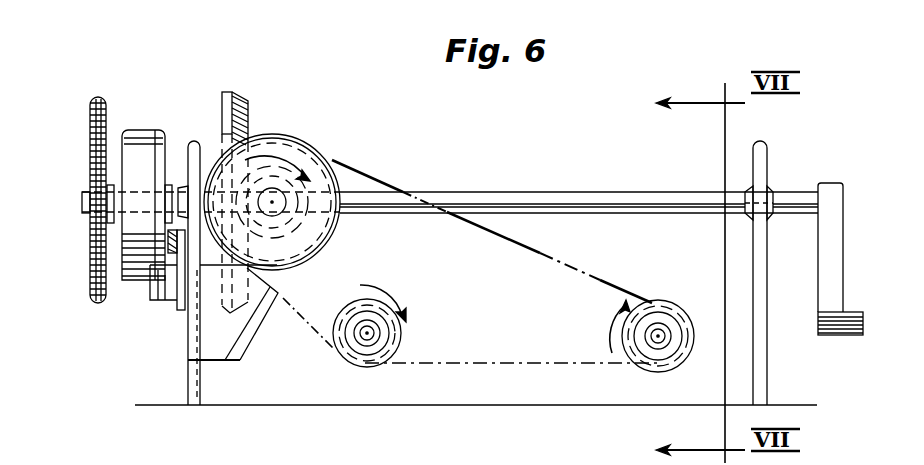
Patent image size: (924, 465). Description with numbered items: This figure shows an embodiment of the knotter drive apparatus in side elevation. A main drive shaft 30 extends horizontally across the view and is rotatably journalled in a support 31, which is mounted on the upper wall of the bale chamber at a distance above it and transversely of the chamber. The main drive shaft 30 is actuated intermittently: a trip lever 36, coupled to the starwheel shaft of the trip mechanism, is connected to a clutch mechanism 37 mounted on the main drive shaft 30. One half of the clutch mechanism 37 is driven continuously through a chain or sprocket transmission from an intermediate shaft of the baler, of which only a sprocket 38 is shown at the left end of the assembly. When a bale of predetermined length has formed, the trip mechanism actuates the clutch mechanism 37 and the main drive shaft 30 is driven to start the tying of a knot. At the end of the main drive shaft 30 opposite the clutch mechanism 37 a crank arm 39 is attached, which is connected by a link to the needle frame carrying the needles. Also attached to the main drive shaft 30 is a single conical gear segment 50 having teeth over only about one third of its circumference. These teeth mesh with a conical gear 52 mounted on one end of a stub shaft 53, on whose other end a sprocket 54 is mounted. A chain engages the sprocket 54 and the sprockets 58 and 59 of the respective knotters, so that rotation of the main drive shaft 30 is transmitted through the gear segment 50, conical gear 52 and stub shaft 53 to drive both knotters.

The main drive shaft 30 is at (590, 192).
The support 31 is at (188, 378).
The trip lever 36 is at (148, 282).
The clutch mechanism 37 is at (178, 148).
The sprocket 38 is at (92, 278).
The crank arm 39 is at (845, 263).
The conical gear segment 50 is at (245, 97).
The conical gear 52 is at (298, 225).
The stub shaft 53 is at (286, 200).
The sprocket 54 is at (337, 183).
The sprocket 58 is at (401, 334).
The sprocket 59 is at (664, 300).